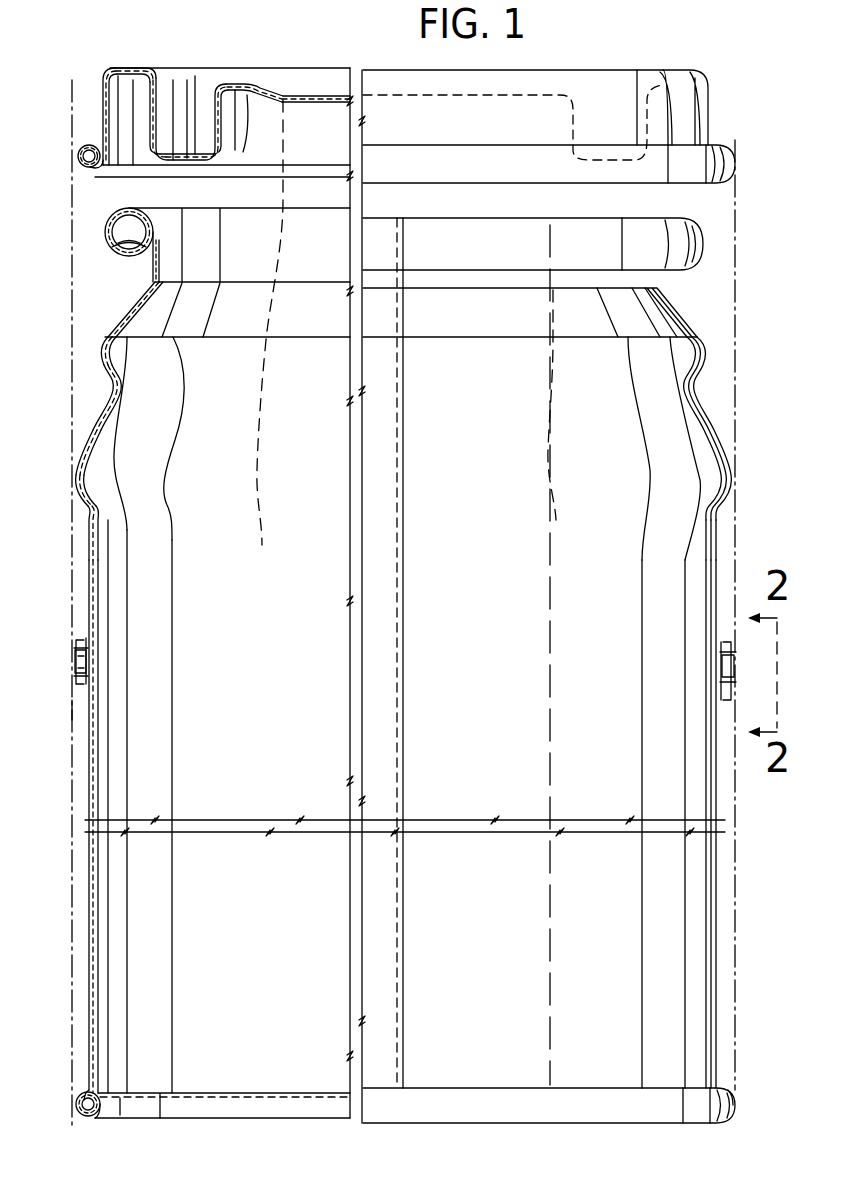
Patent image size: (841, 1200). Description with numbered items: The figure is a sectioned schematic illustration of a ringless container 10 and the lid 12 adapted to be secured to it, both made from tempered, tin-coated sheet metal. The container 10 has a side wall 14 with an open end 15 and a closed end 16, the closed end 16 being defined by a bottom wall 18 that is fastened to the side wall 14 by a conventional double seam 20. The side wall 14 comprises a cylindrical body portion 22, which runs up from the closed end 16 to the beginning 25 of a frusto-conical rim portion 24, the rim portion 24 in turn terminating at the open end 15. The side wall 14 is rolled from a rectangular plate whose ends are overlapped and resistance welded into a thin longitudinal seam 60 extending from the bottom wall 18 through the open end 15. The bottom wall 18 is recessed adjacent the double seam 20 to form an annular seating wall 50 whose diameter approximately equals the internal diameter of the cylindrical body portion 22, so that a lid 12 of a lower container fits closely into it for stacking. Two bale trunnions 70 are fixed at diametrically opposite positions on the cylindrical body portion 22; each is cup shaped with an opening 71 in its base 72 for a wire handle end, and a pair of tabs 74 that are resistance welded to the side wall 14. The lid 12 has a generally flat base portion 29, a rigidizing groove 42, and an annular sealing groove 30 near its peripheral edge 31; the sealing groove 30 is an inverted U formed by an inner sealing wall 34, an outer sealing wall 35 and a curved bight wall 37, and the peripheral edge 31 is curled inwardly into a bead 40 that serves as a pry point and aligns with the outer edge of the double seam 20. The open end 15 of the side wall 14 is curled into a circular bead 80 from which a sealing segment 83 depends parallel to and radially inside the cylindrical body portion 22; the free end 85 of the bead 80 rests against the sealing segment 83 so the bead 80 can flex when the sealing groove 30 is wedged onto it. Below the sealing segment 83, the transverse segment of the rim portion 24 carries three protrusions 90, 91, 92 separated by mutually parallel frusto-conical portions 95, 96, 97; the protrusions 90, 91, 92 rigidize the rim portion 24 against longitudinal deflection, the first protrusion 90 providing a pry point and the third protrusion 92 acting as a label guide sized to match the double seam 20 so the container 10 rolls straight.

The ringless container 10 is at (68, 709).
The lid 12 is at (625, 62).
The side wall 14 is at (84, 870).
The open end 15 is at (301, 210).
The closed end 16 is at (206, 1125).
The bottom wall 18 is at (323, 1122).
The double seam 20 is at (78, 1103).
The cylindrical body portion 22 is at (726, 904).
The frusto-conical rim portion 24 is at (716, 418).
The beginning of frusto-conical rim portion 25 is at (722, 518).
The flat base portion 29 is at (333, 96).
The annular sealing groove 30 is at (137, 83).
The peripheral edge 31 is at (738, 163).
The inner sealing wall 34 is at (170, 100).
The outer sealing wall 35 is at (103, 123).
The bight wall 37 is at (118, 72).
The bead 40 is at (70, 161).
The rigidizing groove 42 is at (245, 84).
The annular seating wall 50 is at (148, 1092).
The longitudinal seam 60 is at (400, 617).
The bale trunnion 70 is at (70, 643).
The opening 71 is at (76, 660).
The base 72 is at (733, 678).
The tabs 74 is at (82, 680).
The circular bead 80 is at (113, 235).
The sealing segment 83 is at (158, 258).
The free end 85 is at (123, 247).
The first protrusion 90 is at (106, 340).
The second protrusion 91 is at (87, 445).
The third protrusion 92 is at (75, 480).
The frusto-conical portion 95 is at (140, 302).
The frusto-conical portion 96 is at (103, 405).
The frusto-conical portion 97 is at (80, 465).